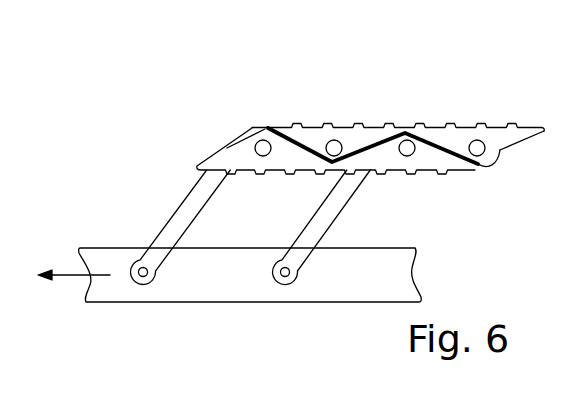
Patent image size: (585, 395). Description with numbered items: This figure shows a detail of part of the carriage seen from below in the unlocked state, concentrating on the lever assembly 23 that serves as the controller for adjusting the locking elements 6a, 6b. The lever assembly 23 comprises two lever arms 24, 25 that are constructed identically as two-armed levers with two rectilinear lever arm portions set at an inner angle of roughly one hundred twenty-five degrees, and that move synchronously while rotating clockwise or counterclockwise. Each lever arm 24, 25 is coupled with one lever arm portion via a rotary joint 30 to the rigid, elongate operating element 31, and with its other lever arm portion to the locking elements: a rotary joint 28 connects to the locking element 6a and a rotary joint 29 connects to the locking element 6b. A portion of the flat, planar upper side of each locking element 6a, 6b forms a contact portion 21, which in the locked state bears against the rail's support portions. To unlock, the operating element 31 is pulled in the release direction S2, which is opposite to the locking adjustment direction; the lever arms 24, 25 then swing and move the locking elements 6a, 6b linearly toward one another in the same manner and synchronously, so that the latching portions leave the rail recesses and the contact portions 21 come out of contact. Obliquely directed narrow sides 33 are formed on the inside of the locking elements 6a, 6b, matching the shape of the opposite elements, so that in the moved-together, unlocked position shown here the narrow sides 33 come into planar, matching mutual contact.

The locking element 6a is at (423, 158).
The locking element 6b is at (503, 140).
The contact portion 21 is at (377, 128).
The lever assembly 23 is at (131, 160).
The lever arm 24 is at (337, 220).
The lever arm 25 is at (180, 222).
The rotary joint 28 is at (250, 128).
The rotary joint 29 is at (334, 147).
The rotary joint 30 is at (144, 285).
The operating element 31 is at (355, 270).
The narrow side 33 is at (264, 147).
The release direction S2 is at (68, 276).